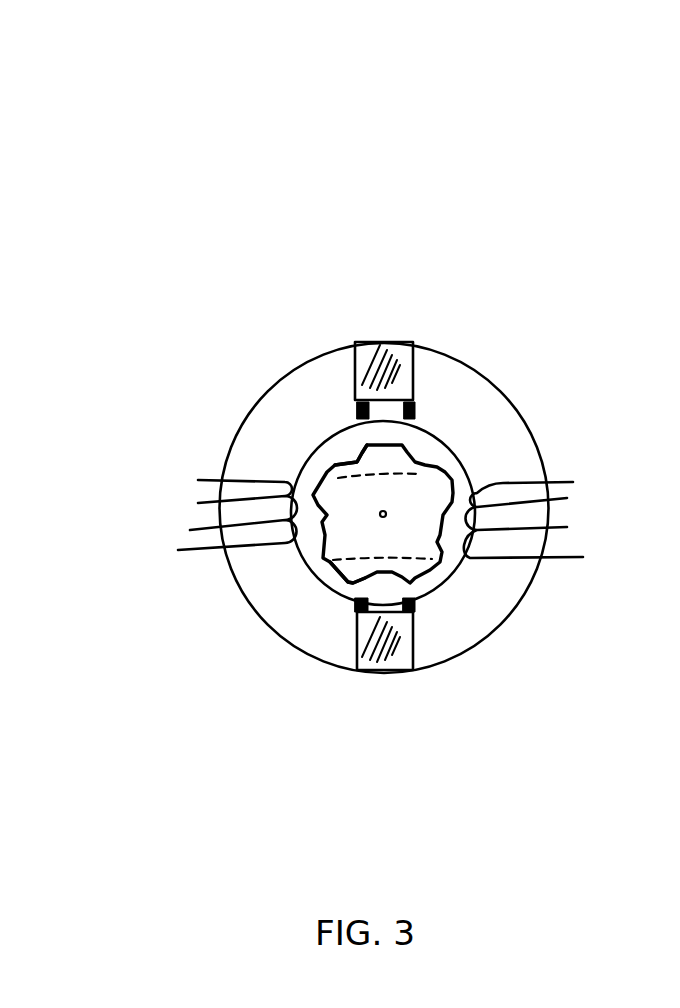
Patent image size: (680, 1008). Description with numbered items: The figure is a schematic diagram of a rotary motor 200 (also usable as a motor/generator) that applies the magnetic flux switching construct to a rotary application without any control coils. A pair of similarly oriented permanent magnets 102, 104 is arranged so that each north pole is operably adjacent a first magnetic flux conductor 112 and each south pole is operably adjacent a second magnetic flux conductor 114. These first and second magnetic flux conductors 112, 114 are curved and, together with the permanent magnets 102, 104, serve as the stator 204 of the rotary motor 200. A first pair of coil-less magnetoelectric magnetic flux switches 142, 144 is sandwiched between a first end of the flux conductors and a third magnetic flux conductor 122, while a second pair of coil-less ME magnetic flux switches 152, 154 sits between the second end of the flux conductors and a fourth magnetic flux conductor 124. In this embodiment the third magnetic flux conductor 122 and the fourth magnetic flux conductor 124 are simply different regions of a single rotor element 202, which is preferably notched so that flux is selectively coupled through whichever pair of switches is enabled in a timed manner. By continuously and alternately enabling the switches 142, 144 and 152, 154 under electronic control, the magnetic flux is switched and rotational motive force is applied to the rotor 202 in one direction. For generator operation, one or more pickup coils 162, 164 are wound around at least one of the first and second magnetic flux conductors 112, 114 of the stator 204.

The rotary motor 200 is at (432, 240).
The stator 204 is at (238, 350).
The rotor element 202 is at (408, 512).
The permanent magnet 102 is at (386, 671).
The permanent magnet 104 is at (384, 342).
The first magnetic flux conductor 112 is at (466, 432).
The second magnetic flux conductor 114 is at (240, 422).
The third magnetic flux conductor 122 is at (366, 468).
The fourth magnetic flux conductor 124 is at (337, 572).
The coil-less ME magnetic flux switch 142 is at (357, 410).
The coil-less ME magnetic flux switch 144 is at (413, 408).
The coil-less ME magnetic flux switch 152 is at (357, 608).
The coil-less ME magnetic flux switch 154 is at (416, 605).
The pickup coil 162 is at (562, 483).
The pickup coil 164 is at (198, 481).